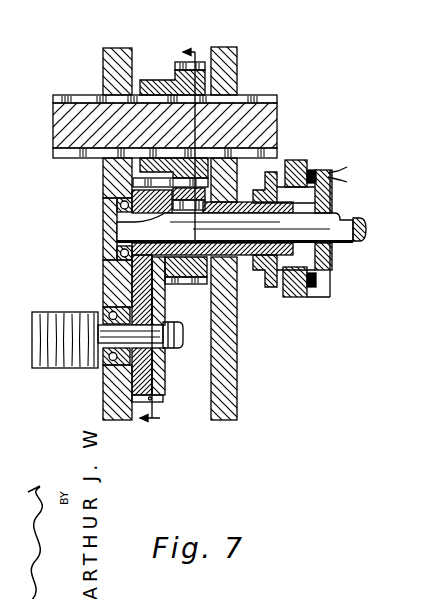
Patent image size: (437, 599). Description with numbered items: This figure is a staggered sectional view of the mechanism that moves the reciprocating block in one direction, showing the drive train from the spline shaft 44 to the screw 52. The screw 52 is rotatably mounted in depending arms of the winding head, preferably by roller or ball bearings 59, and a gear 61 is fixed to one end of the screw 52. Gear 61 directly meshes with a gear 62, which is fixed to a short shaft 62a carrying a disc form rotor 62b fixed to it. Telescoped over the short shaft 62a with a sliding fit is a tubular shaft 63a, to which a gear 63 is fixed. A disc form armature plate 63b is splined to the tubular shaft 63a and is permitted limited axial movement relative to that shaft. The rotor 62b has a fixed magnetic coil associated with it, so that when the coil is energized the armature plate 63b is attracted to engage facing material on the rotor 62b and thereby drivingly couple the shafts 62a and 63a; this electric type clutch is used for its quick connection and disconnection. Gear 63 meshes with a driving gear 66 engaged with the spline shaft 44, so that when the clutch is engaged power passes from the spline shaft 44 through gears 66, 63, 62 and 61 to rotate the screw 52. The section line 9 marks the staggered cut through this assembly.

The spline shaft 44 is at (80, 95).
The driving gear 66 is at (180, 62).
The section line 9- 9 is at (170, 236).
The gear 63 is at (178, 284).
The tubular shaft 63a is at (246, 264).
The disc form armature plate 63b is at (276, 170).
The gear 62 is at (130, 187).
The short shaft 62a is at (337, 243).
The disc form rotor 62b is at (304, 297).
The gear 61 is at (163, 375).
The roller or ball bearings 59 is at (105, 365).
The screw 52 is at (74, 307).